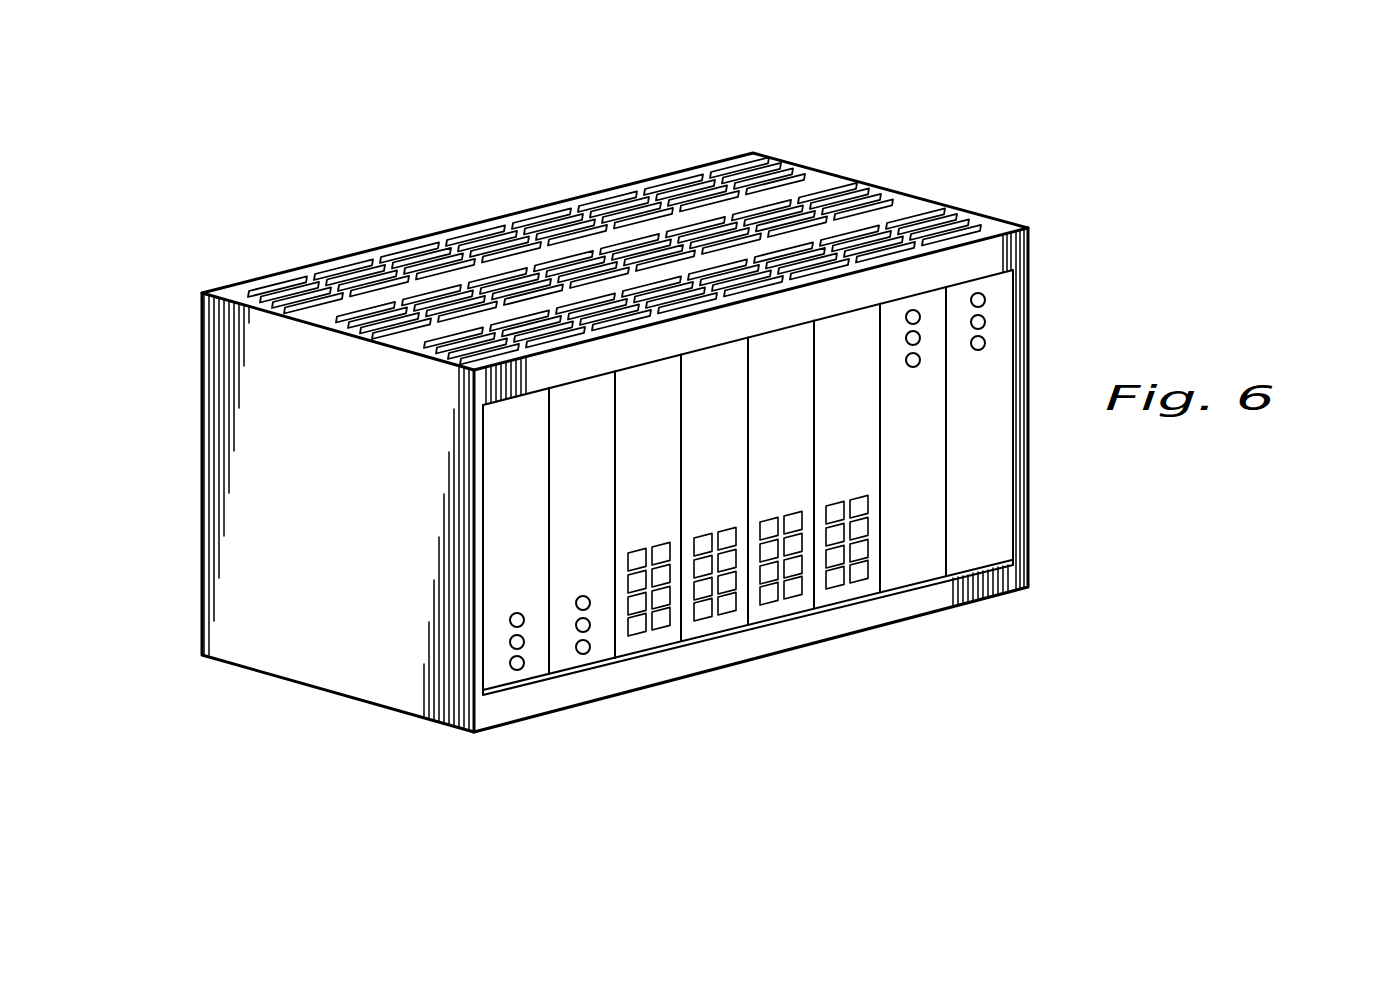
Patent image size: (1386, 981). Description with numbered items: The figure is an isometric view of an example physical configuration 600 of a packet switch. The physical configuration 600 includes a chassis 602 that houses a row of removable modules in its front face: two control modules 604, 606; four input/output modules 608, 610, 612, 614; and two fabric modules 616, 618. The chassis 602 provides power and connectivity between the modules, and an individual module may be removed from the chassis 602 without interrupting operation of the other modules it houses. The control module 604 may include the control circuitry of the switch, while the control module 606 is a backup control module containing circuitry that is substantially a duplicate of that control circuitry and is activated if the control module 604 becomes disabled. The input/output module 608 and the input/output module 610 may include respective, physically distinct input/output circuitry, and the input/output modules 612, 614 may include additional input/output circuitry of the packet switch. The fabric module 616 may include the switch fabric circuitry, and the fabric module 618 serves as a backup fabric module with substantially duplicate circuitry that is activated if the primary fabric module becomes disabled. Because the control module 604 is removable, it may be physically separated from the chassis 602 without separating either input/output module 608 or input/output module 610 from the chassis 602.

The physical configuration 600 is at (298, 145).
The chassis 602 is at (200, 322).
The control module 604 is at (517, 678).
The control module 606 is at (583, 660).
The input/output module 608 is at (648, 644).
The input/output module 610 is at (715, 630).
The input/output module 612 is at (780, 613).
The input/output module 614 is at (845, 597).
The fabric module 616 is at (913, 555).
The fabric module 618 is at (980, 548).